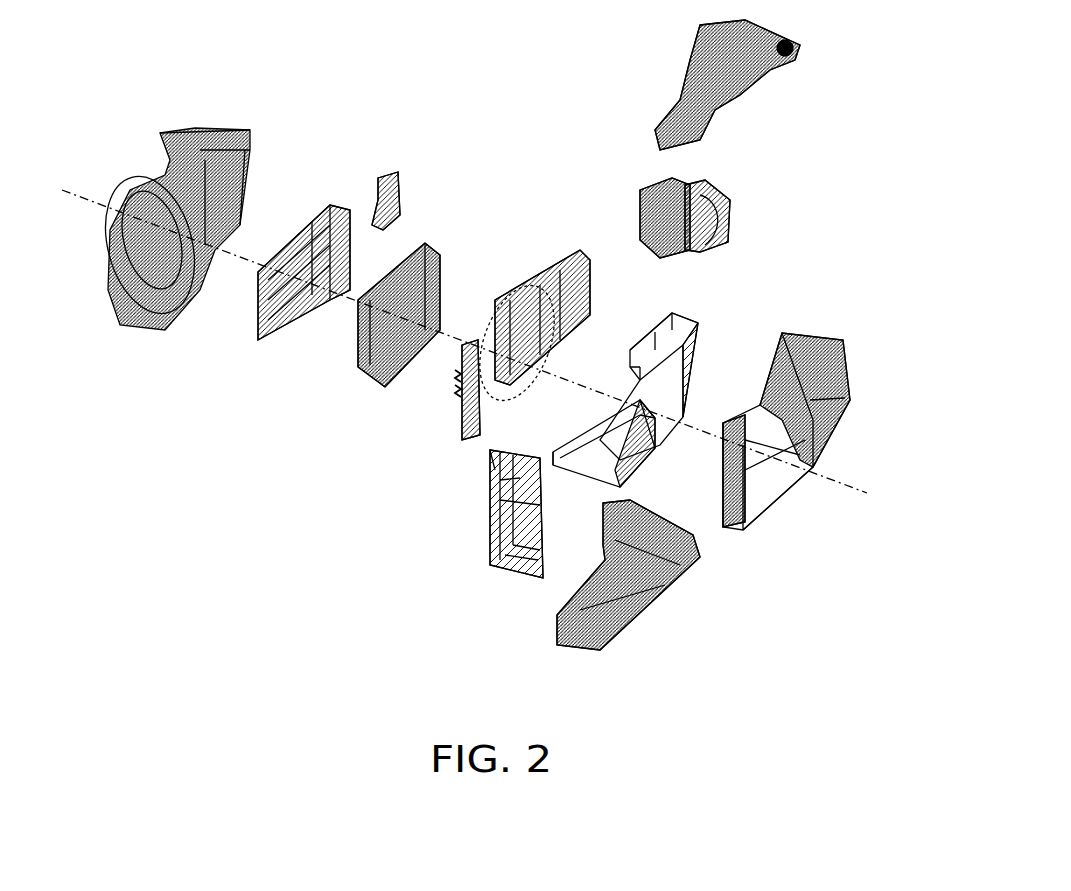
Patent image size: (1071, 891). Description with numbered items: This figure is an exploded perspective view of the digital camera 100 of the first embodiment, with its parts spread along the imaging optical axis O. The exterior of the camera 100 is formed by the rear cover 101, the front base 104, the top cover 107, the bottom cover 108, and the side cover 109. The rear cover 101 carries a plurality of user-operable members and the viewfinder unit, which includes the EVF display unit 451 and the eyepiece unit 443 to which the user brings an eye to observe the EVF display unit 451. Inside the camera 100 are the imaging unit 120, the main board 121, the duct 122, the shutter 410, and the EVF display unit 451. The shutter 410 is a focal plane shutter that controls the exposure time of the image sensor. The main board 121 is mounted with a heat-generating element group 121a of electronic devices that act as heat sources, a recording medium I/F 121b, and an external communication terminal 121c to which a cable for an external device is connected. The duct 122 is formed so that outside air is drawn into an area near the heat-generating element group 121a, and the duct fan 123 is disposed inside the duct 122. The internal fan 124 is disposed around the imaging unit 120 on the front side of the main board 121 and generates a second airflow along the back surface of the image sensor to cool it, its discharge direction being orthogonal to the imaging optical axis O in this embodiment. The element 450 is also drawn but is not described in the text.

The imaging optical axis O is at (447, 332).
The camera 100 is at (873, 128).
The rear cover 101 is at (833, 356).
The front base 104 is at (186, 130).
The top cover 107 is at (690, 96).
The bottom cover 108 is at (618, 598).
The side cover 109 is at (505, 545).
The imaging unit 120 is at (358, 370).
The main board 121 is at (478, 432).
The heat-generating element group 121a is at (510, 296).
The recording medium I/F 121b is at (558, 262).
The external communication terminal 121c is at (455, 388).
The duct 122 is at (668, 375).
The duct fan 123 is at (642, 474).
The internal fan 124 is at (378, 182).
The shutter 410 is at (257, 340).
The eyepiece unit 443 is at (722, 205).
The rear frame 450 is at (772, 478).
The EVF display unit 451 is at (664, 206).